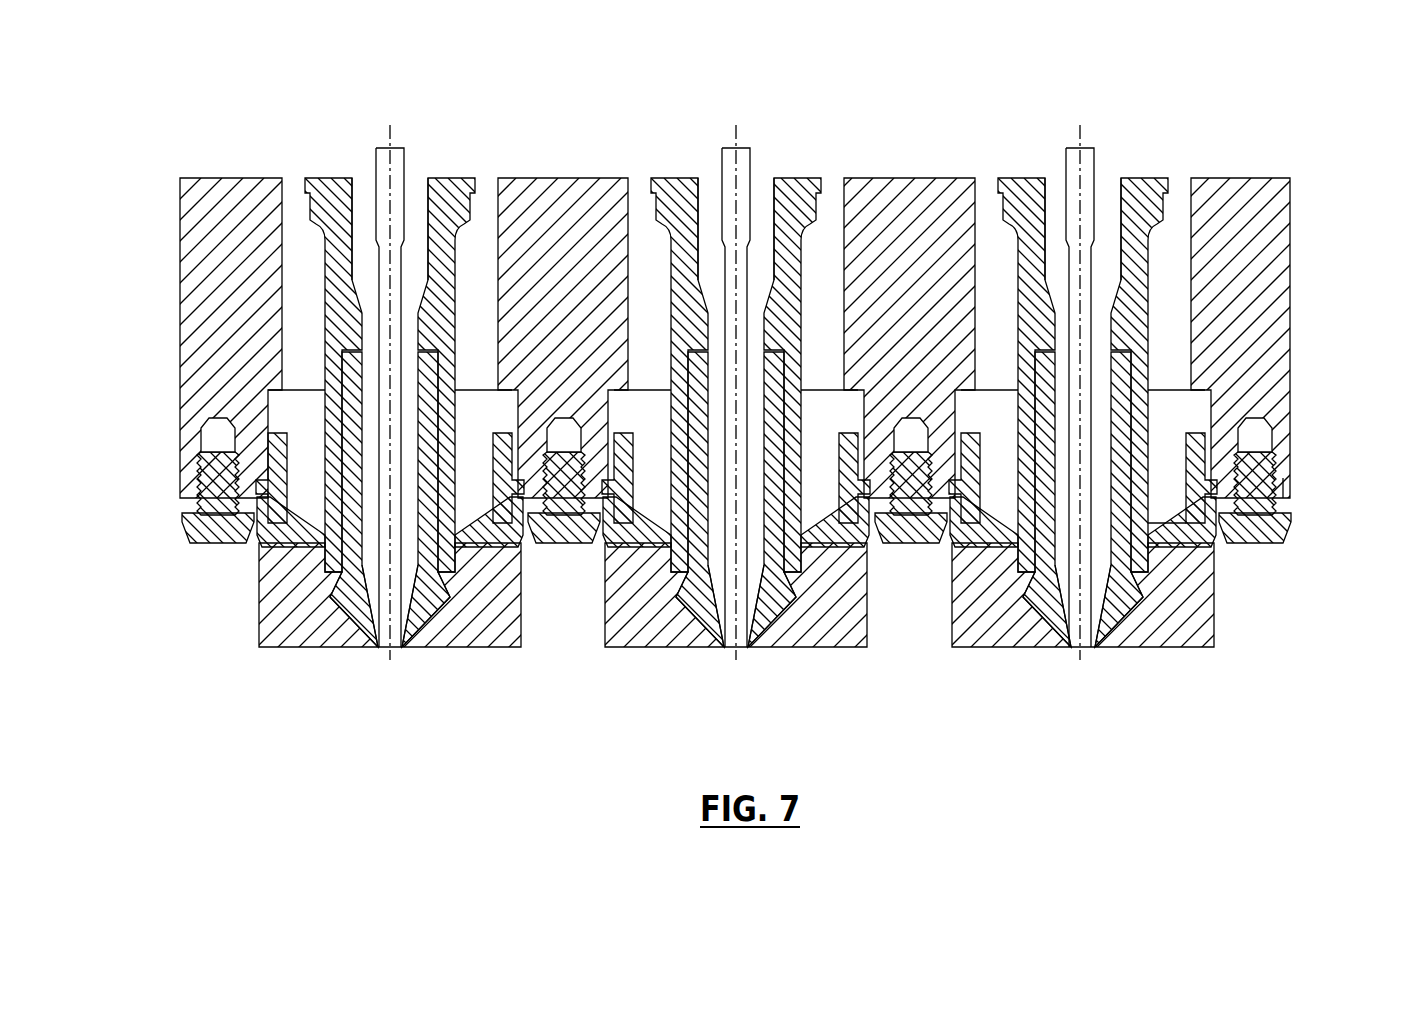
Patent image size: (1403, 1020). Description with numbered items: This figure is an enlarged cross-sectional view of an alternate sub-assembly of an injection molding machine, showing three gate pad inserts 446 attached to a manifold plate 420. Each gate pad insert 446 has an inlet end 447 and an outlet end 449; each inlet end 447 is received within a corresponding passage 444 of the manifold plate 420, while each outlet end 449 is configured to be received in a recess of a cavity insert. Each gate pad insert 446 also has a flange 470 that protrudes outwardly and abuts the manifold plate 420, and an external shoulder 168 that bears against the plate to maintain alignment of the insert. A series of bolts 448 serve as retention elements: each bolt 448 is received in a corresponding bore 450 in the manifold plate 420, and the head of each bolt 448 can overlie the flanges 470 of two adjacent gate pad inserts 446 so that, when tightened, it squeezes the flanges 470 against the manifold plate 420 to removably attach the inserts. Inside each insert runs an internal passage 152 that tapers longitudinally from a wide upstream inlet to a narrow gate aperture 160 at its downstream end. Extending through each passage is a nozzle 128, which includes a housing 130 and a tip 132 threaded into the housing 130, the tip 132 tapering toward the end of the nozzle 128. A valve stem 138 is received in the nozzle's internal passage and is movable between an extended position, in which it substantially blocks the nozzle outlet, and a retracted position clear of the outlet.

The nozzle 128 is at (425, 162).
The housing 130 is at (457, 205).
The tip 132 is at (433, 357).
The valve stem 138 is at (377, 193).
The internal passage 152 is at (1170, 530).
The gate aperture 160 is at (404, 648).
The external shoulder 168 is at (1290, 478).
The manifold plate 420 is at (1285, 190).
The passage 444 is at (483, 188).
The gate pad insert 446 is at (275, 632).
The inlet end 447 is at (206, 500).
The bolt 448 is at (190, 548).
The outlet end 449 is at (500, 632).
The bore 450 is at (272, 475).
The flange 470 is at (258, 530).